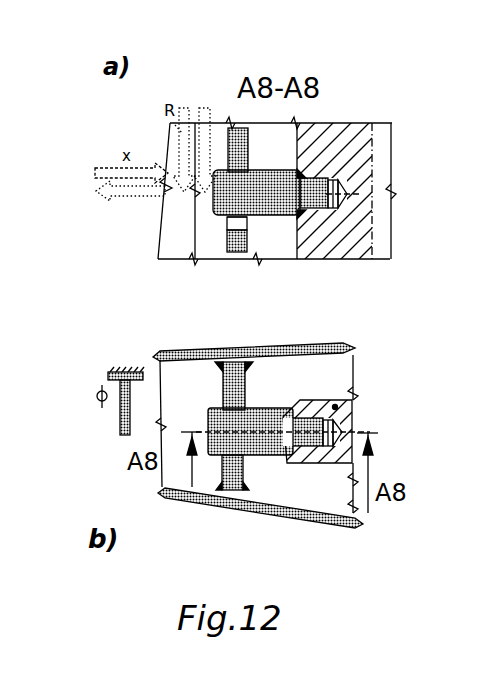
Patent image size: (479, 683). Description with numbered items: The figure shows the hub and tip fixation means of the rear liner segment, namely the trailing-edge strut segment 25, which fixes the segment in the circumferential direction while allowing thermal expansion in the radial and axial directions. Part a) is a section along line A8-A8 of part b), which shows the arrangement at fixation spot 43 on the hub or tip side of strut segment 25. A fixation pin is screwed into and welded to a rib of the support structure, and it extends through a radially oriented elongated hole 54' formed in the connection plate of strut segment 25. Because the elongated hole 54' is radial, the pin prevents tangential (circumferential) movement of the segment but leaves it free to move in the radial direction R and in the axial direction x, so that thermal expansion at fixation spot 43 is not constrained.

The strut segment 25 is at (340, 343).
The fixation spot 43 is at (245, 318).
The elongated hole 54' is at (167, 241).